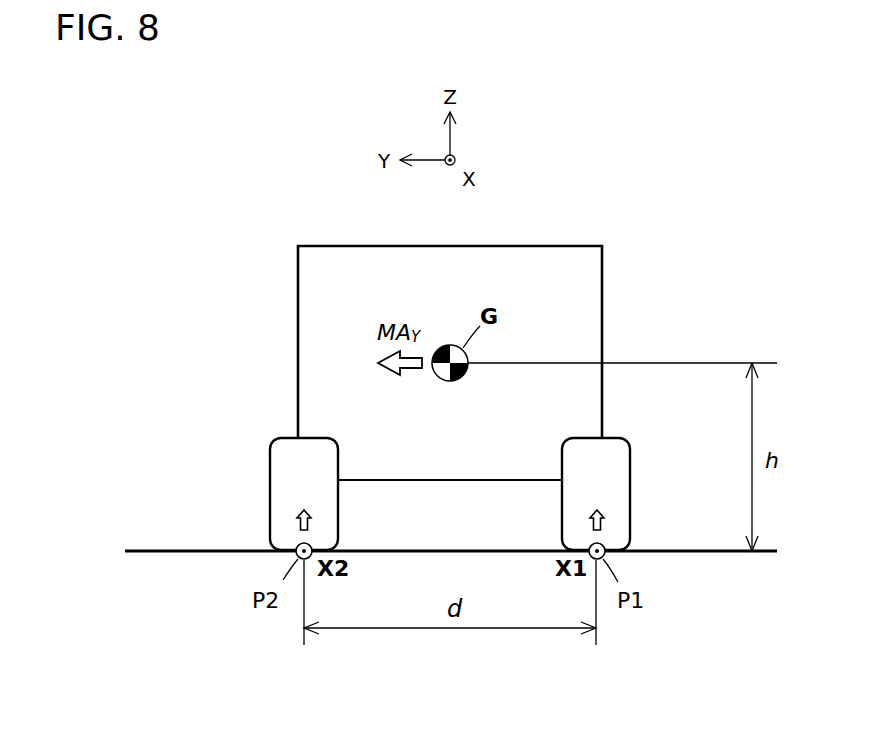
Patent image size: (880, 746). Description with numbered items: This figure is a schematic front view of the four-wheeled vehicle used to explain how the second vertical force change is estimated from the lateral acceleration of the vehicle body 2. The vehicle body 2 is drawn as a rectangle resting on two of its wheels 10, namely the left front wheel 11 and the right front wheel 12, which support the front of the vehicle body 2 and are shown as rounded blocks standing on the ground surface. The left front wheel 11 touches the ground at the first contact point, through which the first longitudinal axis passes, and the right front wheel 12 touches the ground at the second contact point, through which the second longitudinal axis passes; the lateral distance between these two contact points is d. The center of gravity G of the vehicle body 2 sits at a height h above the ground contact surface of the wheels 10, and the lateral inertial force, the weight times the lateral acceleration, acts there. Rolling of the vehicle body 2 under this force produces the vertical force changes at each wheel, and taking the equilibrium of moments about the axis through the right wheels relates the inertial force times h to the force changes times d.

The vehicle body 2 is at (602, 288).
The wheels 10 is at (456, 486).
The left front wheel 11 is at (630, 458).
The right front wheel 12 is at (270, 458).